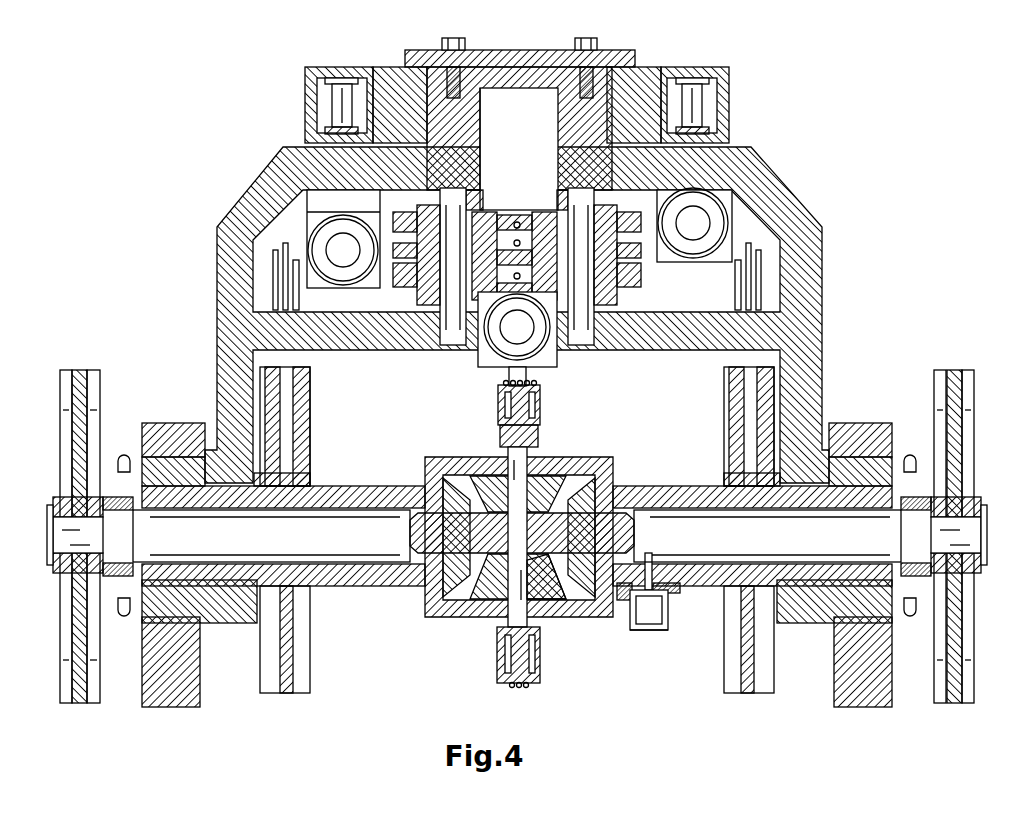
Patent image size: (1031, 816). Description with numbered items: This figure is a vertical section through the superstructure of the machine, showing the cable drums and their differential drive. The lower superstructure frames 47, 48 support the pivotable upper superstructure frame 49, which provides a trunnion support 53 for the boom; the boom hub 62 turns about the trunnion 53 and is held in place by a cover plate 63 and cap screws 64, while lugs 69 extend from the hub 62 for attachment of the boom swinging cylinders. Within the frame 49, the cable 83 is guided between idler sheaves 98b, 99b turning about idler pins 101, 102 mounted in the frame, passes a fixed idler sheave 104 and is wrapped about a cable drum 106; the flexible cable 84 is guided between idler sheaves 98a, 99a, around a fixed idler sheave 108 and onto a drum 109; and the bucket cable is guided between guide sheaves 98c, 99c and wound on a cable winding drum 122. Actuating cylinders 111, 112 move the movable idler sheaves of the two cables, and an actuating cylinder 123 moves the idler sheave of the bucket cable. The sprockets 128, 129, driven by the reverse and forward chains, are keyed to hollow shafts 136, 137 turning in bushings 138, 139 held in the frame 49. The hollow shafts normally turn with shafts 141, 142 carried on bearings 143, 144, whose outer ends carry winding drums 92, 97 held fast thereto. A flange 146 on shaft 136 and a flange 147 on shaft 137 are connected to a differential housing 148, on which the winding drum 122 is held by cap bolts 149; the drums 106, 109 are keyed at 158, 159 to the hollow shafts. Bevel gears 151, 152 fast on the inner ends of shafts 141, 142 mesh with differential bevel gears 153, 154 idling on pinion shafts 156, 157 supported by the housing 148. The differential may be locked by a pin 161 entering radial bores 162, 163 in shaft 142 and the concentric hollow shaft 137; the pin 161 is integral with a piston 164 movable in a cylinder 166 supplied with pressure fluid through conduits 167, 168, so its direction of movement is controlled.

The lower superstructure frame 47 is at (198, 673).
The lower superstructure frame 48 is at (895, 663).
The upper superstructure frame 49 is at (217, 345).
The trunnion support 53 is at (439, 133).
The hub 62 is at (647, 70).
The cover plate 63 is at (515, 50).
The cap screws 64 is at (598, 45).
The lugs 69 is at (305, 121).
The cable 83 is at (512, 248).
The flexible cable 84 is at (520, 222).
The winding drum 92 is at (97, 413).
The winding drum 97 is at (978, 402).
The idler sheave 98a is at (626, 226).
The idler sheave 98b is at (636, 261).
The guide sheave 98c is at (613, 292).
The idler sheave 99a is at (400, 227).
The idler sheave 99b is at (396, 259).
The guide sheave 99c is at (417, 283).
The idler pin 101 is at (565, 170).
The idler pin 102 is at (479, 157).
The fixed idler sheave 104 is at (280, 243).
The cable drum 106 is at (310, 444).
The fixed idler sheave 108 is at (762, 258).
The drum 109 is at (770, 413).
The actuating cylinder 111 is at (343, 228).
The actuating cylinder 112 is at (707, 205).
The cable winding drum 122 is at (540, 395).
The actuating cylinder 123 is at (507, 333).
The sprocket 128 is at (124, 456).
The sprocket 129 is at (916, 458).
The hollow shaft 136 is at (424, 488).
The hollow shaft 137 is at (647, 495).
The bushing 138 is at (204, 450).
The bushing 139 is at (838, 447).
The shaft 141 is at (271, 542).
The shaft 142 is at (789, 542).
The bearing 143 is at (127, 516).
The bearing 144 is at (902, 516).
The flange 146 is at (425, 462).
The flange 147 is at (608, 475).
The differential housing 148 is at (588, 457).
The cap bolts 149 is at (540, 431).
The bevel gear 151 is at (467, 598).
The bevel gear 152 is at (573, 605).
The differential bevel gear 153 is at (575, 465).
The differential bevel gear 154 is at (489, 600).
The pinion shaft 156 is at (532, 465).
The pinion shaft 157 is at (538, 625).
The key 158 is at (375, 488).
The key 159 is at (725, 486).
The pin 161 is at (626, 603).
The radial bore 162 is at (648, 556).
The radial bore 163 is at (658, 566).
The piston 164 is at (665, 610).
The cylinder 166 is at (667, 628).
The pressure conduit 167 is at (680, 588).
The pressure conduit 168 is at (655, 631).